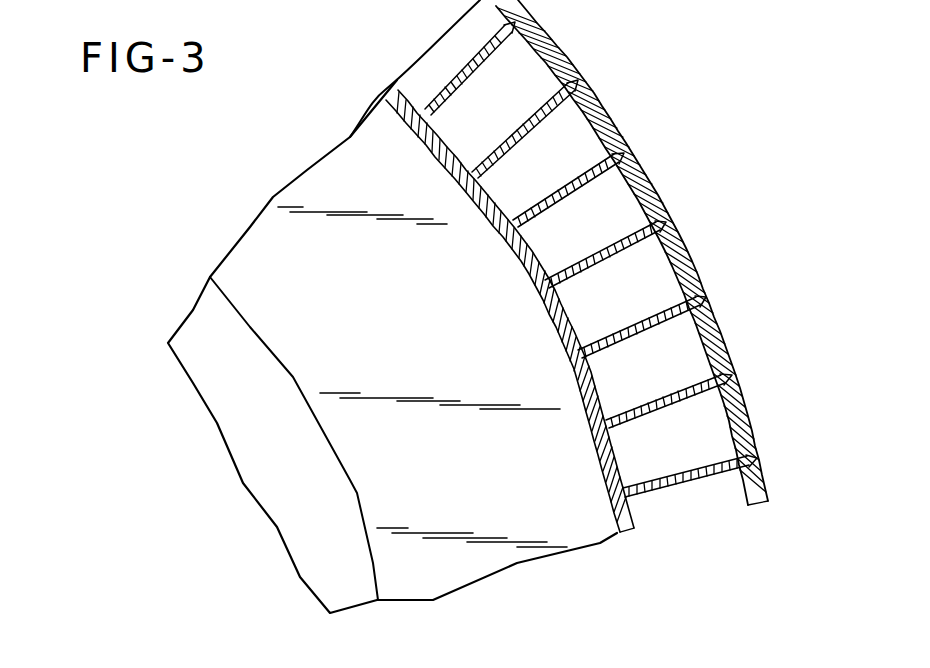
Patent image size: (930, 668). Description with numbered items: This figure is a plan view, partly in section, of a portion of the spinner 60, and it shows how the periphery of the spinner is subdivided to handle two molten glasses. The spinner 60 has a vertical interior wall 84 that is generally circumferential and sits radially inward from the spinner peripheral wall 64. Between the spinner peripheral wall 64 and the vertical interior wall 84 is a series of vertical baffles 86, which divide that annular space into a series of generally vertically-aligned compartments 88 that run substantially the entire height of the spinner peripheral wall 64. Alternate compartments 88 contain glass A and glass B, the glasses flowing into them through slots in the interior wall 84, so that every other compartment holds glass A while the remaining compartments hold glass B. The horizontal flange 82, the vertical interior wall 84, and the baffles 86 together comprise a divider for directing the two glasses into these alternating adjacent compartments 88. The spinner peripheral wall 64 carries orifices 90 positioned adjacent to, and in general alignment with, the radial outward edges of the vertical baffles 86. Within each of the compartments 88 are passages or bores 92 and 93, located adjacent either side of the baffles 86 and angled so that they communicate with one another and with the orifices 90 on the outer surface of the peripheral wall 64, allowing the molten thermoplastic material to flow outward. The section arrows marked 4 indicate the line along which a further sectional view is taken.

The spinner 60 is at (732, 120).
The spinner peripheral wall 64 is at (750, 417).
The horizontal flange 82 is at (265, 243).
The vertical interior wall 84 is at (513, 266).
The vertical baffles 86 is at (668, 305).
The compartments 88 is at (667, 384).
The orifices 90 is at (585, 80).
The passages or bores 92 is at (543, 33).
The passages or bores 93 is at (512, 27).
The section line 4- 4 is at (458, 137).